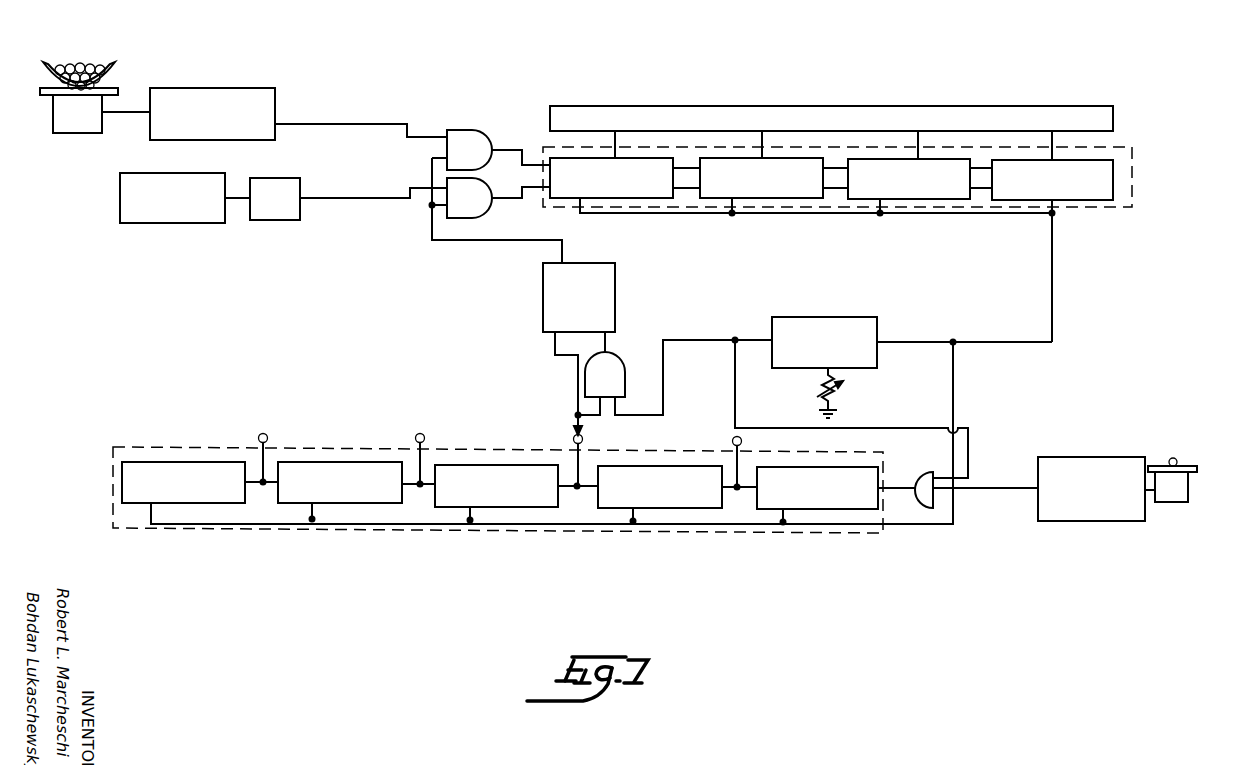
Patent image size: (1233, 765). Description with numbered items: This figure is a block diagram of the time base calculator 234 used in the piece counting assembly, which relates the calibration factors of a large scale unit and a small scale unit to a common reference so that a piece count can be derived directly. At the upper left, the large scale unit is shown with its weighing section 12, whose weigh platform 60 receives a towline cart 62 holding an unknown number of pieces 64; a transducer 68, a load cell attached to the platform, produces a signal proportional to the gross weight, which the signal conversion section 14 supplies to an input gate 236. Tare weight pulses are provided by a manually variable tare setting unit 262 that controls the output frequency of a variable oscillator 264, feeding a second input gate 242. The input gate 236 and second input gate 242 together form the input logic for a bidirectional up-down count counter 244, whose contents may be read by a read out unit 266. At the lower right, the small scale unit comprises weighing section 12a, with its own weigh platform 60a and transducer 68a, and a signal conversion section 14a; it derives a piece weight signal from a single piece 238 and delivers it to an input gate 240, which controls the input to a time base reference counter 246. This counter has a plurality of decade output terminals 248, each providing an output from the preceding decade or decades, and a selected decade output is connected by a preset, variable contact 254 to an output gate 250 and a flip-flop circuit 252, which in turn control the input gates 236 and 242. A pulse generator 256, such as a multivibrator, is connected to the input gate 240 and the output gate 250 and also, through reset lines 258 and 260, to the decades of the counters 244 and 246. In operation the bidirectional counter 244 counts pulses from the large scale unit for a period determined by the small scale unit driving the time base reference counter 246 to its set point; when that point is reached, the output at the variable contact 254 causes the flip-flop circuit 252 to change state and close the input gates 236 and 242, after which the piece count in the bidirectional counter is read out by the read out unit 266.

The weighing section 12 is at (42, 134).
The signal conversion section 14 is at (205, 100).
The weigh platform 60 is at (43, 94).
The towline cart 62 is at (112, 70).
The pieces 64 is at (72, 64).
The transducer 68 is at (74, 120).
The tare setting unit 262 is at (176, 212).
The variable oscillator 264 is at (280, 185).
The time base calculator 234 is at (437, 282).
The input gate 236 is at (460, 140).
The second input gate 242 is at (480, 206).
The read out unit 266 is at (806, 106).
The bidirectional up-down count counter 244 is at (1134, 190).
The flip-flop circuit 252 is at (605, 284).
The output gate 250 is at (612, 368).
The preset variable contact 254 is at (574, 417).
The pulse generator 256 is at (868, 331).
The reset line 258 is at (1053, 300).
The reset line 260 is at (954, 386).
The input gate 240 is at (920, 506).
The time base reference counter 246 is at (486, 534).
The decade output terminals 248 is at (268, 436).
The signal conversion section 14a is at (1093, 508).
The weighing section 12a is at (1200, 416).
The weigh platform 60a is at (1152, 463).
The transducer 68a is at (1176, 497).
The piece 238 is at (1178, 462).